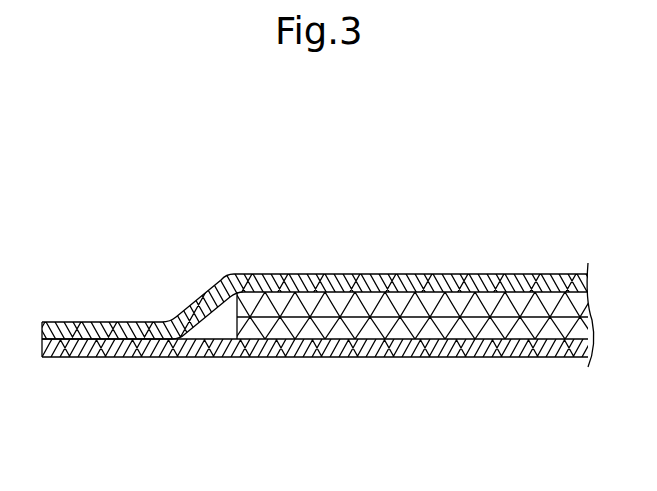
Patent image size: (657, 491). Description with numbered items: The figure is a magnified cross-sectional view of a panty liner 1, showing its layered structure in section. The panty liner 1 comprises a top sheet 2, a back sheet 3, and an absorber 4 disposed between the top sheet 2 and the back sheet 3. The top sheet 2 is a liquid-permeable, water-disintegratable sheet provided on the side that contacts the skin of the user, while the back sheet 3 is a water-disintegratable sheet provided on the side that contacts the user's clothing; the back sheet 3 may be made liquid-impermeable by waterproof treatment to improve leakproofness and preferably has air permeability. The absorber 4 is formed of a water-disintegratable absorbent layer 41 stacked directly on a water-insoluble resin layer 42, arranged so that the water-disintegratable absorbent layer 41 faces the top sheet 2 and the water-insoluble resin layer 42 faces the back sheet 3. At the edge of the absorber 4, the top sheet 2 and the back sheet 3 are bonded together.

The panty liner 1 is at (186, 222).
The top sheet 2 is at (530, 275).
The back sheet 3 is at (423, 357).
The absorber 4 is at (220, 320).
The water-disintegratable absorbent layer 41 is at (283, 300).
The water-insoluble resin layer 42 is at (295, 328).